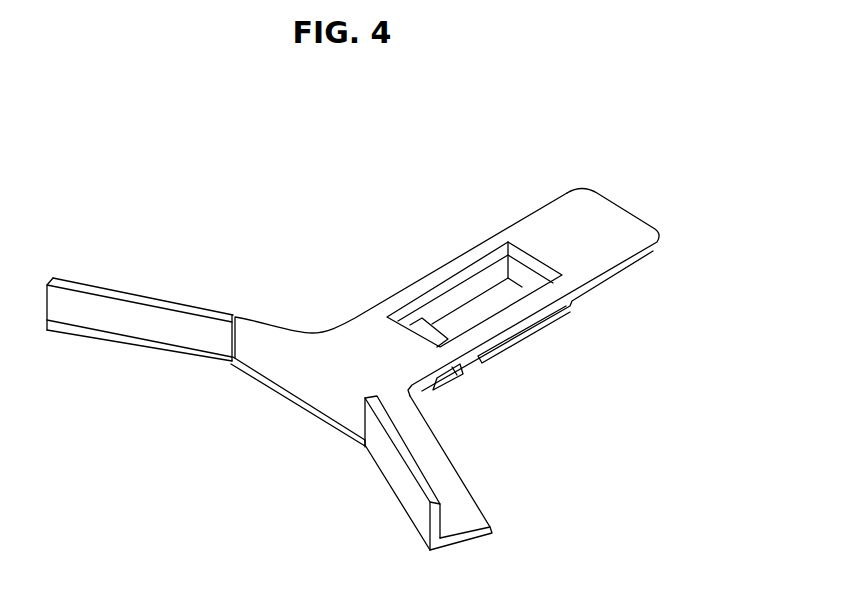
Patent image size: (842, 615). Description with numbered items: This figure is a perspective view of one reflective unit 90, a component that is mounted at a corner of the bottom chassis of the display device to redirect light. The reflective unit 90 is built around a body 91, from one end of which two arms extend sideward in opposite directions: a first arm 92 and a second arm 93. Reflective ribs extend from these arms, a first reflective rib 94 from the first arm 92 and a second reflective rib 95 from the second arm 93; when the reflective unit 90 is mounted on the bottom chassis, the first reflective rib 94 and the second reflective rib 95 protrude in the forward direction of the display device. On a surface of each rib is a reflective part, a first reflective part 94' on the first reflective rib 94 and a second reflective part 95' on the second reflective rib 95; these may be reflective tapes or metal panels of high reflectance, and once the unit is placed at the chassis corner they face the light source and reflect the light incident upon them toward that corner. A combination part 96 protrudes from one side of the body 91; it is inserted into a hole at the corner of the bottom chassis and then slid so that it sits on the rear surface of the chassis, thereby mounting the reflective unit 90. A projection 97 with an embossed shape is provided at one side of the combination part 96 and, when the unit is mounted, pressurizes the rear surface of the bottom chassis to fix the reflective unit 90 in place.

The reflective unit 90 is at (197, 233).
The body 91 is at (550, 215).
The first arm 92 is at (255, 332).
The second arm 93 is at (443, 478).
The first reflective rib 94 is at (140, 267).
The first reflective part 94' is at (139, 365).
The second reflective rib 95 is at (391, 473).
The second reflective part 95' is at (344, 459).
The combination part 96 is at (532, 333).
The projection 97 is at (477, 358).